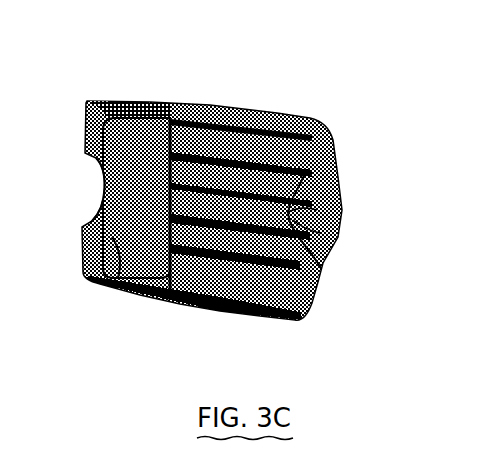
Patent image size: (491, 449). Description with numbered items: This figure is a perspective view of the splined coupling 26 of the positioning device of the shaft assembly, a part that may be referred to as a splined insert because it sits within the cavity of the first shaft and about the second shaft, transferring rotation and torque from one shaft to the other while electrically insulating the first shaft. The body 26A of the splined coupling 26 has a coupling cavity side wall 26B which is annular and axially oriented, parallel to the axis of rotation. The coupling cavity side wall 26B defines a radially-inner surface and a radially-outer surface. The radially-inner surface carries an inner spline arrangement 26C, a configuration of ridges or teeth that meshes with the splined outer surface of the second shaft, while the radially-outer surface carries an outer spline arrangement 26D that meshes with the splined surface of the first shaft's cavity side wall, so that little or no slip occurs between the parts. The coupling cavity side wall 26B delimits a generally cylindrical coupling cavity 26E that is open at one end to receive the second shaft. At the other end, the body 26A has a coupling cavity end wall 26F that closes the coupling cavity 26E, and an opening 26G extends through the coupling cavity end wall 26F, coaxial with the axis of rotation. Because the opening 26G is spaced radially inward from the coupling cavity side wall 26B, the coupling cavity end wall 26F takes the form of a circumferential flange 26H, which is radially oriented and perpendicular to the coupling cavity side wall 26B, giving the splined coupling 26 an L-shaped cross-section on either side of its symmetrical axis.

The splined coupling 26 is at (173, 302).
The body 26A is at (113, 105).
The coupling cavity side wall 26B is at (231, 133).
The inner spline arrangement 26C is at (323, 273).
The outer spline arrangement 26D is at (343, 218).
The coupling cavity 26E is at (265, 252).
The coupling cavity end wall 26F is at (112, 237).
The opening 26G is at (93, 190).
The circumferential flange 26H is at (90, 252).